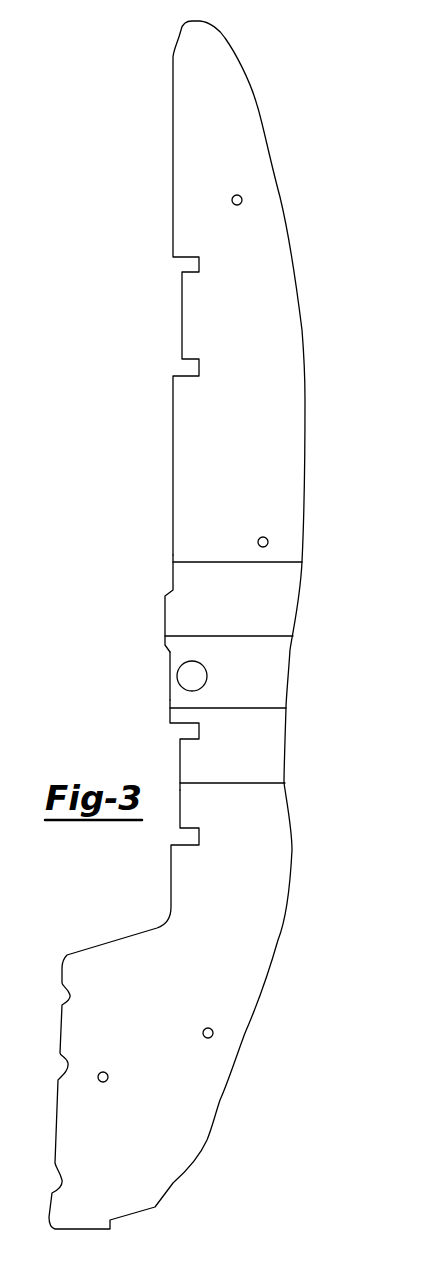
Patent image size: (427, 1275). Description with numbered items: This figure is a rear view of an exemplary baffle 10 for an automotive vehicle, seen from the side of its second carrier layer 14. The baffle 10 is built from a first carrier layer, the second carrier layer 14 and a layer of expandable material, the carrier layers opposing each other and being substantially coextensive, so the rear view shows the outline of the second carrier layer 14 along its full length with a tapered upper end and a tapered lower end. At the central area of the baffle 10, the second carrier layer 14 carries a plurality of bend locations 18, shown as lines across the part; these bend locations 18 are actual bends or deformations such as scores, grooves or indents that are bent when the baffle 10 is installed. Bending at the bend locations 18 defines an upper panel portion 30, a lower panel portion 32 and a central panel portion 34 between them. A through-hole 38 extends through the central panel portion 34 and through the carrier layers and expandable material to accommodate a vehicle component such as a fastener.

The baffle 10 is at (330, 331).
The second carrier layer 14 is at (230, 471).
The bend locations 18 is at (193, 637).
The upper panel portion 30 is at (278, 607).
The lower panel portion 32 is at (262, 749).
The central panel portion 34 is at (272, 680).
The through-hole 38 is at (190, 677).